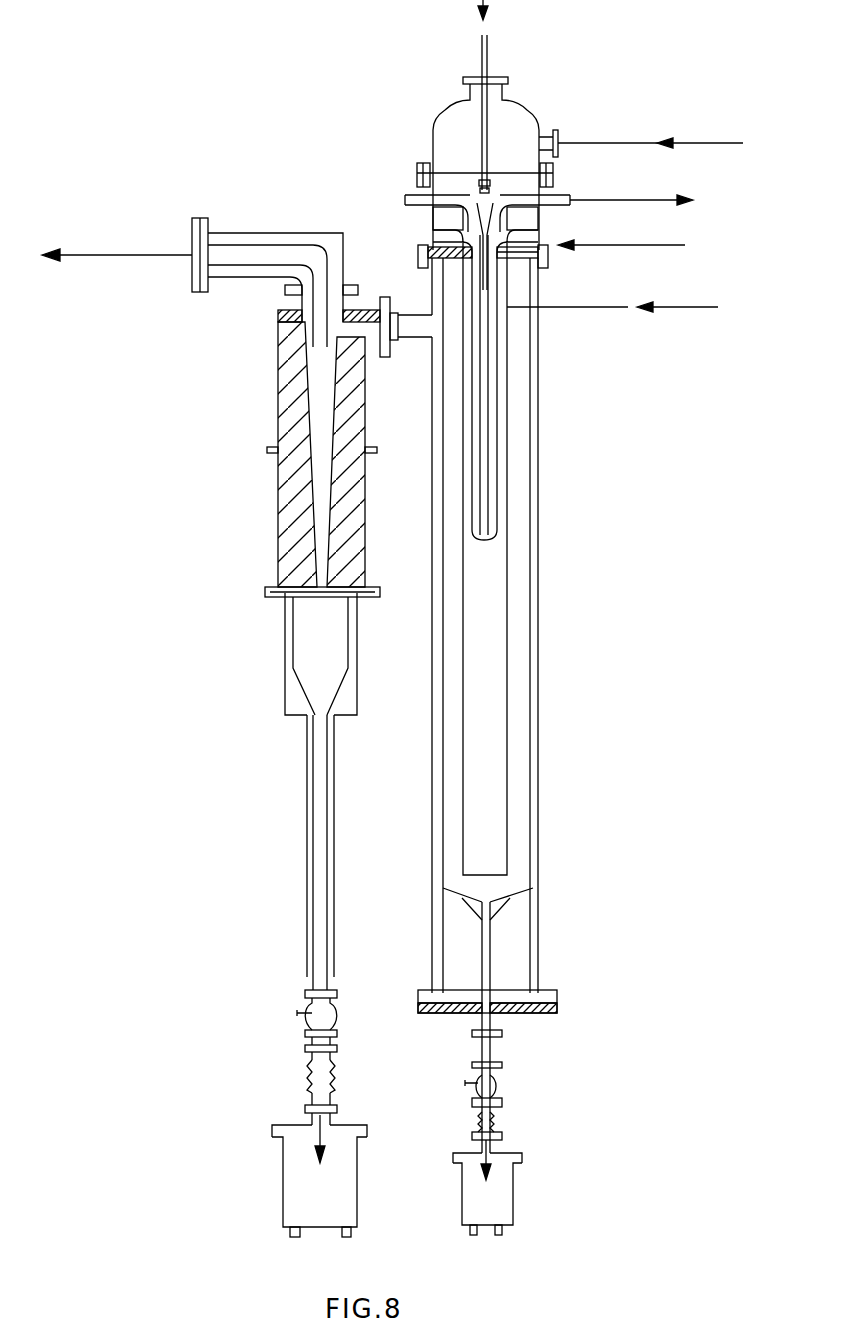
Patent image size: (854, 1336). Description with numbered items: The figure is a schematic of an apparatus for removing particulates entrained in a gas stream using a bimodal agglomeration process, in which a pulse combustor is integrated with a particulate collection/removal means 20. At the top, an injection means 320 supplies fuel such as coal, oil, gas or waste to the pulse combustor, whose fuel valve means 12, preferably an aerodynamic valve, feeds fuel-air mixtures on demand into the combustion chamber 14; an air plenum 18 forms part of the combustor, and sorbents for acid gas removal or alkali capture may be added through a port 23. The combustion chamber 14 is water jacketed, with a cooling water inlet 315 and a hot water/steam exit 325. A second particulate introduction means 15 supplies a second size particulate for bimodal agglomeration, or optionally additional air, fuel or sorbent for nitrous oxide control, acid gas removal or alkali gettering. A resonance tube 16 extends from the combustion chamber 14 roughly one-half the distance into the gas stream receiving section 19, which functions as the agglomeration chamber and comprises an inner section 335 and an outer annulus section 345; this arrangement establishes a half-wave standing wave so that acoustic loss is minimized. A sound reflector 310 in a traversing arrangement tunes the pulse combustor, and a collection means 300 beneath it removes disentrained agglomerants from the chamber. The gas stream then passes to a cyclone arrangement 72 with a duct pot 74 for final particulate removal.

The fuel valve means 12 is at (493, 197).
The combustion chamber 14 is at (460, 222).
The second particulate introduction means 15 is at (583, 310).
The resonance tube 16 is at (495, 522).
The air plenum 18 is at (455, 122).
The gas stream receiving section 19 is at (538, 617).
The particulate collection/removal means 20 is at (165, 656).
The port 23 is at (590, 143).
The cyclone arrangement 72 is at (280, 410).
The duct pot 74 is at (297, 1182).
The collection means 300 is at (505, 1193).
The sound reflector 310 is at (507, 900).
The cooling water inlet 315 is at (545, 243).
The injection means 320 is at (483, 48).
The hot water/steam exit 325 is at (568, 197).
The inner section 335 is at (507, 693).
The outer annulus section 345 is at (530, 715).